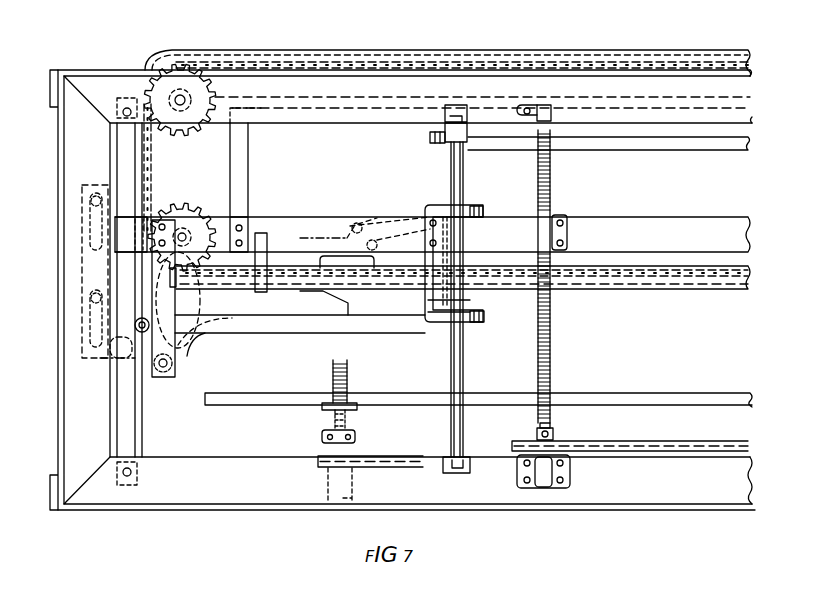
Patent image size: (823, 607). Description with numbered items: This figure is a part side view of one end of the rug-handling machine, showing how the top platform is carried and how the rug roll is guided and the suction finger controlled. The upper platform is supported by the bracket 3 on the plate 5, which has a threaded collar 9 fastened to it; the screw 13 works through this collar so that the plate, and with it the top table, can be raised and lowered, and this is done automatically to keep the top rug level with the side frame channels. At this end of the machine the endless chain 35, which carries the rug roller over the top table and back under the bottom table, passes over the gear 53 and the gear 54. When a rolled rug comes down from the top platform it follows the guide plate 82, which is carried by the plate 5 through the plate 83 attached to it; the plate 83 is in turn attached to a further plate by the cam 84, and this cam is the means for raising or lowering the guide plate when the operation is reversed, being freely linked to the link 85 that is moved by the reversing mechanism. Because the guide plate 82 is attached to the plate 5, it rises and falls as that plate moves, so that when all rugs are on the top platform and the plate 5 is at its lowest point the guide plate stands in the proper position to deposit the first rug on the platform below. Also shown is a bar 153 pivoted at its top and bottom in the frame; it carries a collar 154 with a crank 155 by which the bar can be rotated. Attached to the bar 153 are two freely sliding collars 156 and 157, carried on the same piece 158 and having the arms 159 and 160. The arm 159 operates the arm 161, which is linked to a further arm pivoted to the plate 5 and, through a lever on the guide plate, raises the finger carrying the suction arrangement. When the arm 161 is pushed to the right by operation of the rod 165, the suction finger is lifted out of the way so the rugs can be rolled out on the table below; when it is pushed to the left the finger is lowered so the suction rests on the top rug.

The bracket 3 is at (249, 176).
The plate 5 is at (638, 214).
The threaded collar 9 is at (549, 228).
The screw 13 is at (554, 345).
The chain 35 is at (153, 145).
The gear 53 is at (165, 200).
The gear 54 is at (185, 68).
The guide plate 82 is at (88, 262).
The plate 83 is at (178, 371).
The cam 84 is at (143, 362).
The link 85 is at (266, 334).
The bar 153 is at (470, 380).
The collar 154 is at (471, 127).
The crank 155 is at (434, 131).
The sliding collar 156 is at (440, 205).
The sliding collar 157 is at (453, 328).
The piece 158 is at (424, 306).
The arm 159 is at (478, 203).
The arm 160 is at (485, 320).
The arm 161 is at (390, 215).
The rod 165 is at (700, 144).